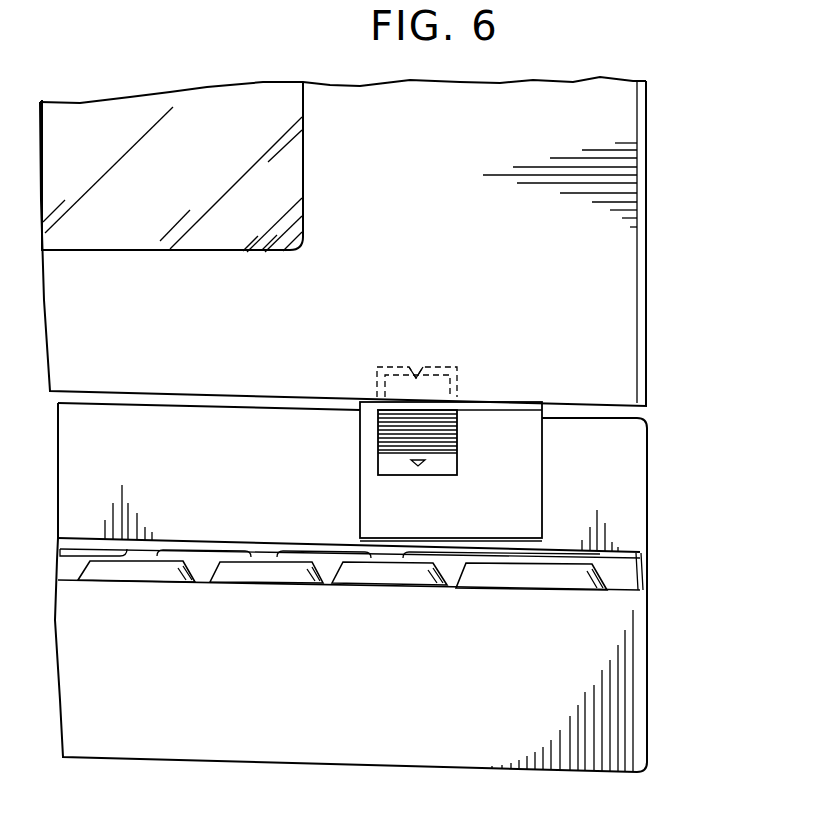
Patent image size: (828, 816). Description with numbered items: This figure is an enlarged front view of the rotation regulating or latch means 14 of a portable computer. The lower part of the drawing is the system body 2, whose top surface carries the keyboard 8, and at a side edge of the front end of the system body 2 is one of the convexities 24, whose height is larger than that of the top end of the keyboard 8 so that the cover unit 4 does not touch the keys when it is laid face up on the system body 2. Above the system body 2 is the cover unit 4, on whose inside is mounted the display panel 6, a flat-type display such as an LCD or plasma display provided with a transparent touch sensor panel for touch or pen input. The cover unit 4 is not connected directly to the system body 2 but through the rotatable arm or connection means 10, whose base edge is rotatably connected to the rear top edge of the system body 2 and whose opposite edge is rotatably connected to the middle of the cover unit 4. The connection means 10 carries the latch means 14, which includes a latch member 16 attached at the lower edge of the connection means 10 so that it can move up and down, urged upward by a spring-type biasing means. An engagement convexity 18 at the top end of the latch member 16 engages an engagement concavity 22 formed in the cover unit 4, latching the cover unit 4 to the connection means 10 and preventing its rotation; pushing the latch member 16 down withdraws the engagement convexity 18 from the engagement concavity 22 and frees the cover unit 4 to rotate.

The system body 2 is at (613, 677).
The cover unit 4 is at (615, 275).
The display panel 6 is at (237, 98).
The keyboard 8 is at (233, 518).
The connection means 10 is at (520, 458).
The latch means 14 is at (362, 344).
The latch member 16 is at (443, 460).
The engagement convexity 18 is at (440, 387).
The engagement concavity 22 is at (423, 374).
The convexities 24 is at (648, 548).